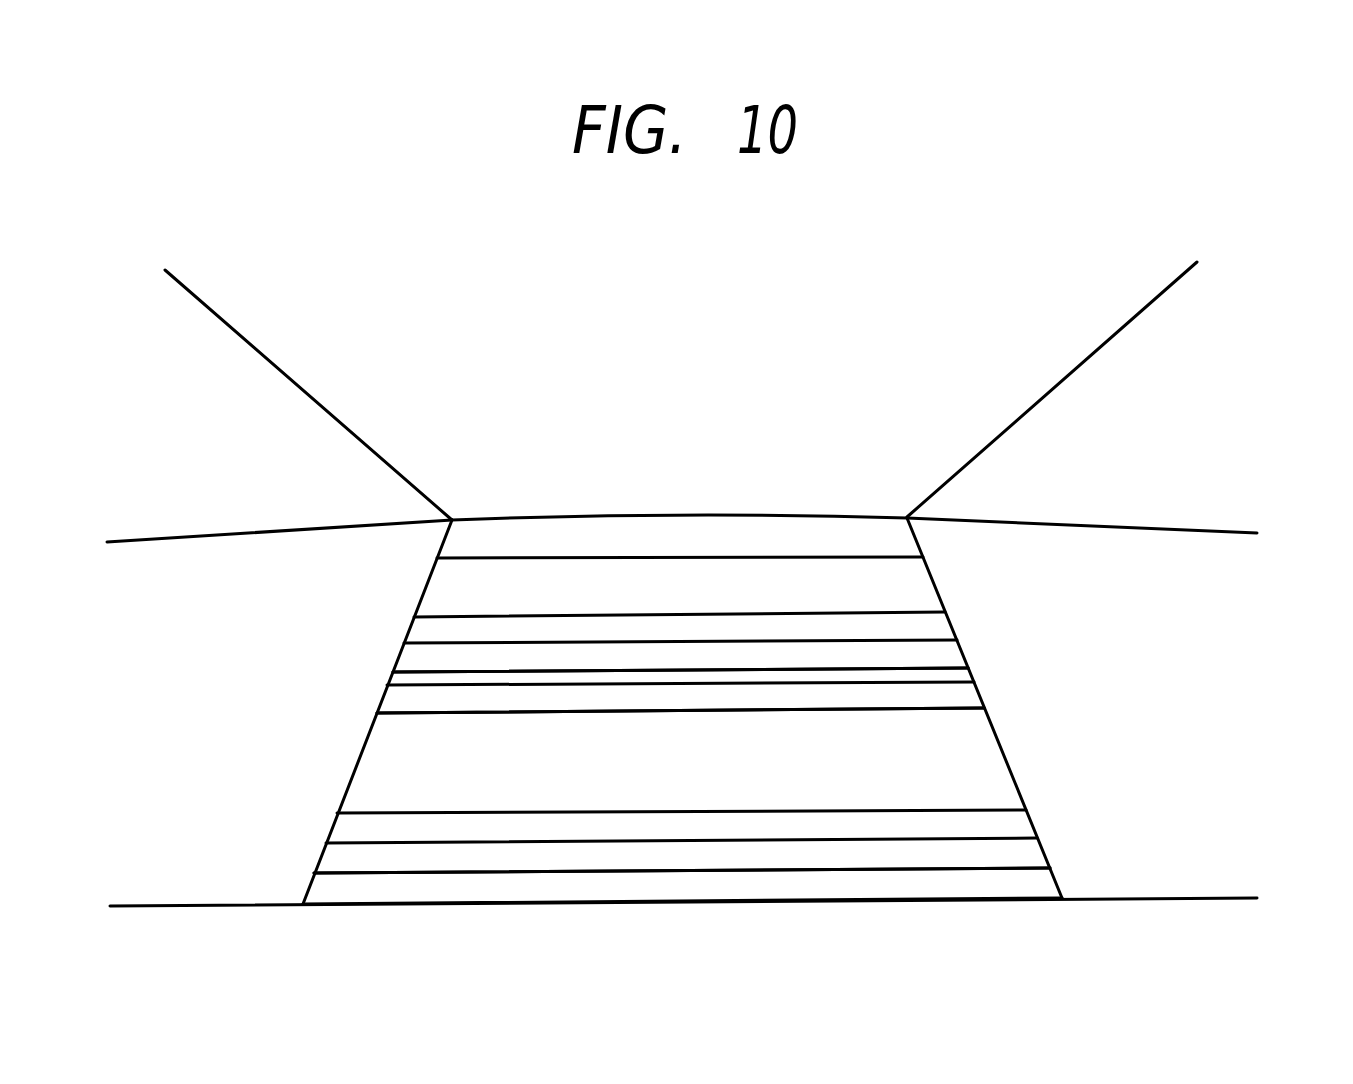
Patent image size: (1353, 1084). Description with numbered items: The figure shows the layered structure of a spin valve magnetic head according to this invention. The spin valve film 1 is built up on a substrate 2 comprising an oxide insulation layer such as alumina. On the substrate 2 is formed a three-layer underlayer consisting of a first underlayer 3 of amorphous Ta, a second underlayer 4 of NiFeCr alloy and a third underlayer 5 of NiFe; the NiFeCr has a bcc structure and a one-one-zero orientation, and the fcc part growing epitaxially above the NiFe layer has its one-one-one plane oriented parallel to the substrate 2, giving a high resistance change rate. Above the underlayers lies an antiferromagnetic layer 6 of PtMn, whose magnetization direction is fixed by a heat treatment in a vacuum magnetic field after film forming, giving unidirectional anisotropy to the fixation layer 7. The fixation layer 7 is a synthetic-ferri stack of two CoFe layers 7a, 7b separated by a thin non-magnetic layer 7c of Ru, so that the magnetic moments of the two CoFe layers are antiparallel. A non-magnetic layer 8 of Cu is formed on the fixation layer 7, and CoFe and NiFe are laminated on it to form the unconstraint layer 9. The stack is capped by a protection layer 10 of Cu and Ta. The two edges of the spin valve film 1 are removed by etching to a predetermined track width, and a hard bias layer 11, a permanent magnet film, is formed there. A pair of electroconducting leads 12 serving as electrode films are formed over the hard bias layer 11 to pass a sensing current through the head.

The spin valve film 1 is at (263, 887).
The substrate 2 is at (1160, 913).
The first underlayer 3 is at (1043, 883).
The second underlayer 4 is at (1033, 855).
The third underlayer 5 is at (1012, 825).
The antiferromagnetic layer 6 is at (975, 743).
The fixation layer 7 is at (970, 633).
The CoFe layer (fixation layer 1) 7a is at (810, 692).
The CoFe layer 7b is at (653, 658).
The non-magnetic layer of Ru 7c is at (720, 675).
The non-magnetic layer 8 is at (932, 625).
The unconstraint layer 9 is at (910, 583).
The protection layer 10 is at (895, 543).
The hard bias layer 11 is at (330, 560).
The electroconducting leads 12 is at (277, 413).